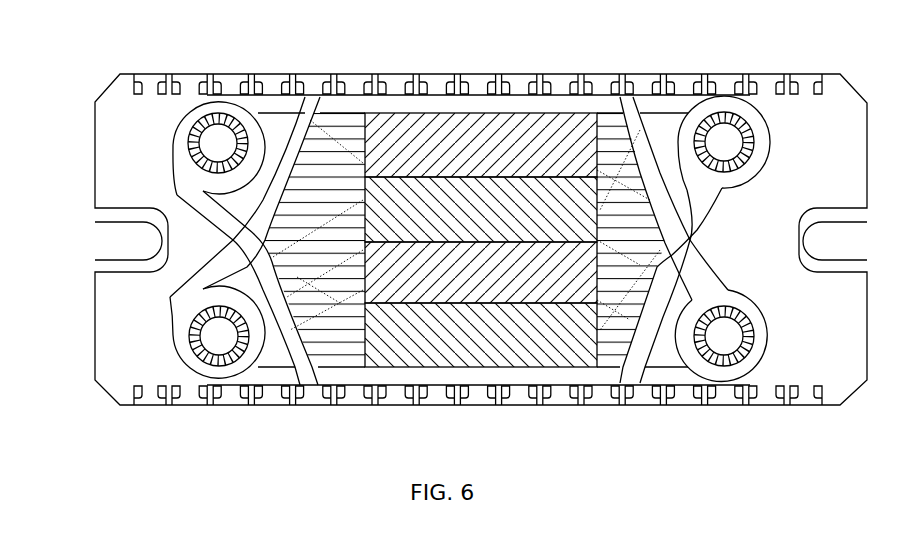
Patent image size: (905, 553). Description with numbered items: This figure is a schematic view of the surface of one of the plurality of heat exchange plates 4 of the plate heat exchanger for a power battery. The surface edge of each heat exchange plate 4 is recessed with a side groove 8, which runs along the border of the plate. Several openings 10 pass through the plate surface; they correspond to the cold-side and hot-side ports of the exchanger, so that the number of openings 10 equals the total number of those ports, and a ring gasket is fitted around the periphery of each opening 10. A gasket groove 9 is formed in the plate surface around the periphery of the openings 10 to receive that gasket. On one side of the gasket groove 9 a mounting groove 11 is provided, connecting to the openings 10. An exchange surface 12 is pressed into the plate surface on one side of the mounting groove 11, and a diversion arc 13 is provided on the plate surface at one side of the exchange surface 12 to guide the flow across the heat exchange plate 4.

The heat exchange plate 4 is at (112, 170).
The side groove 8 is at (402, 80).
The gasket groove 9 is at (678, 103).
The opening 10 is at (227, 138).
The mounting groove 11 is at (208, 265).
The exchange surface 12 is at (335, 118).
The diversion arc 13 is at (547, 137).